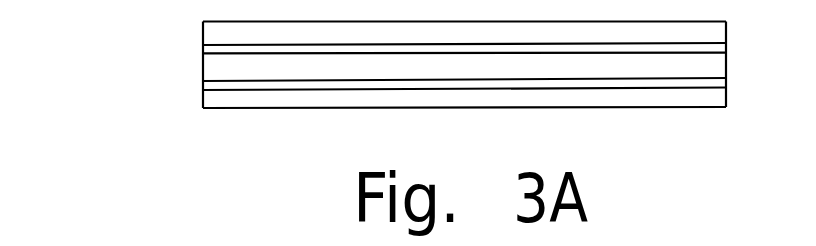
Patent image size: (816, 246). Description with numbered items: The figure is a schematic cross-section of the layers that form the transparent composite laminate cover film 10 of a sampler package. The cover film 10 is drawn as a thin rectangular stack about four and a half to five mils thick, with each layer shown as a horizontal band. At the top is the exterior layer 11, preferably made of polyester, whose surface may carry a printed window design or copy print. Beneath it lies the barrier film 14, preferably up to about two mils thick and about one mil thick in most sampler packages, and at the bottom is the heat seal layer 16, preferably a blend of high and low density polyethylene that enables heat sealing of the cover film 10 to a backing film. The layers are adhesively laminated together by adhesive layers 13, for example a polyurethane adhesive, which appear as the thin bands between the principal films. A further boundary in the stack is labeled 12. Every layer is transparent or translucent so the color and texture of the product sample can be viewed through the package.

The cover film 10 is at (98, 80).
The exterior layer 11 is at (208, 31).
The first boundary layer 12 is at (697, 43).
The adhesive layers 13 is at (208, 50).
The barrier film 14 is at (715, 68).
The heat seal layer 16 is at (208, 98).